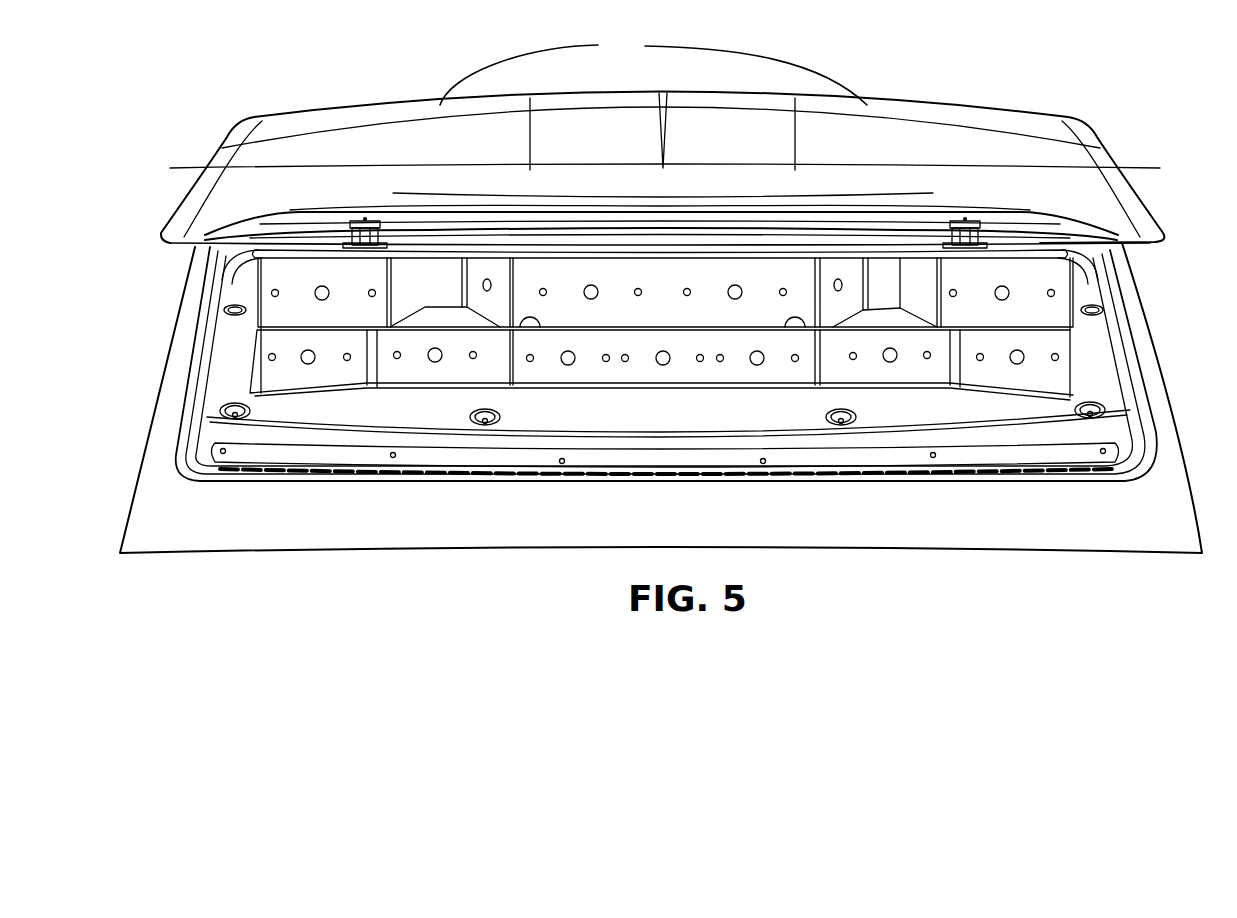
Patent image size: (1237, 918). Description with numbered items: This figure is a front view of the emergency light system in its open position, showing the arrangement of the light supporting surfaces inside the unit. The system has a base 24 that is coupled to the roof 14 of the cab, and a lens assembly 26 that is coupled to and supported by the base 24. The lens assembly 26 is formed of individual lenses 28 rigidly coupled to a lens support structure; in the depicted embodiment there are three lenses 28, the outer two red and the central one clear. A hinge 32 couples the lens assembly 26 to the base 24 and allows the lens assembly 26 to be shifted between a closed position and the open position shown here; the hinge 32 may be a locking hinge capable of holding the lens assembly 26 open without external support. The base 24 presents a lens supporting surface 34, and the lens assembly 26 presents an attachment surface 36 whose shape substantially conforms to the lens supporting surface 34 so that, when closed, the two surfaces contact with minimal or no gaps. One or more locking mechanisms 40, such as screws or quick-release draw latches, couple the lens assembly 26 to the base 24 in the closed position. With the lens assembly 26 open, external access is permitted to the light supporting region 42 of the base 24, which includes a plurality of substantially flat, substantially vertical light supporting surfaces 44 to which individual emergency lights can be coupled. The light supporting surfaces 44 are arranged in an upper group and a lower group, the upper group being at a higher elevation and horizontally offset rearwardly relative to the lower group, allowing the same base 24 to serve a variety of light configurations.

The roof 14 is at (1160, 422).
The base 24 is at (490, 492).
The lens assembly 26 is at (1095, 110).
The lenses 28 is at (643, 97).
The hinge 32 is at (948, 230).
The lens supporting surface 34 is at (193, 442).
The attachment surface 36 is at (212, 243).
The locking mechanisms 40 is at (1103, 210).
The light supporting region 42 is at (787, 400).
The light supporting surfaces 44 is at (790, 285).